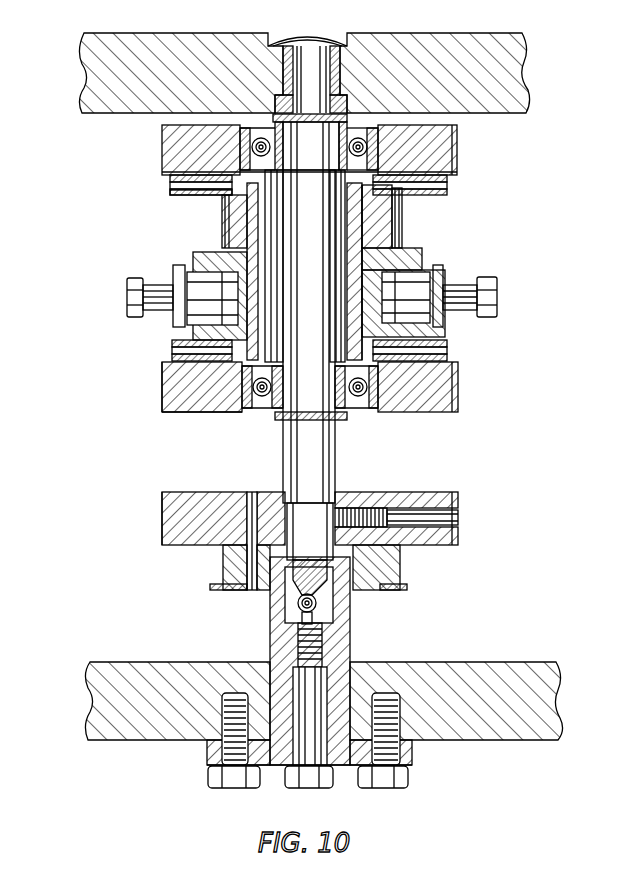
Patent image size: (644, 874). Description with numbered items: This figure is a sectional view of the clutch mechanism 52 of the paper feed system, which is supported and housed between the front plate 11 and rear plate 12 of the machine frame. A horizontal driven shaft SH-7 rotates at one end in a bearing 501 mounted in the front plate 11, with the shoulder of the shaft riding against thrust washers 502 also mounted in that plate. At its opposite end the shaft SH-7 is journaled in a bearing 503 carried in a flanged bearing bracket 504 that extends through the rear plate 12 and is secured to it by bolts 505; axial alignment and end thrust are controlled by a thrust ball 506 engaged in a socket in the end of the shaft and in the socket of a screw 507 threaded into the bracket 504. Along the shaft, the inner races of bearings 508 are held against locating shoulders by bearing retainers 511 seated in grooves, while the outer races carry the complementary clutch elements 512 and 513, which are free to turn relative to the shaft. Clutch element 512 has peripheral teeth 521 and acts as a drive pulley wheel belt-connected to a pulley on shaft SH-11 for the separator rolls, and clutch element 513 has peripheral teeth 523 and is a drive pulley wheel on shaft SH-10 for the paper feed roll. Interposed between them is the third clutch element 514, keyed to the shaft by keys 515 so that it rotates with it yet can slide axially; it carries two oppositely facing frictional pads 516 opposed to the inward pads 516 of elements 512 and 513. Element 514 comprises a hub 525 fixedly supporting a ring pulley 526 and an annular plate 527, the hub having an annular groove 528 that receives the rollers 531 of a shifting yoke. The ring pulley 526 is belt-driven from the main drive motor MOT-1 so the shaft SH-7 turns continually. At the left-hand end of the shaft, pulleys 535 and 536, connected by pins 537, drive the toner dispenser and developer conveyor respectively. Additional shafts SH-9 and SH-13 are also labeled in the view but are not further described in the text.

The front plate 11 is at (516, 48).
The rear plate 12 is at (501, 738).
The bearing 501 is at (283, 62).
The thrust washers 502 is at (343, 100).
The bearings 508 is at (253, 122).
The bearing retainers 511 is at (285, 124).
The clutch element 513 is at (455, 128).
The peripheral teeth 523 is at (458, 163).
The shaft SH-10 is at (152, 159).
The frictional pads 516 is at (170, 181).
The annular plate 527 is at (170, 194).
The keys 515 is at (226, 210).
The main drive motor MOT-1 is at (208, 230).
The third clutch element 514 is at (184, 254).
The hub 525 is at (406, 250).
The ring pulley 526 is at (398, 222).
The annular groove 528 is at (424, 327).
The rollers 531 is at (184, 266).
The clutch mechanism 52 is at (506, 295).
The shaft SH-11 is at (458, 386).
The peripheral teeth 521 is at (162, 390).
The clutch element 512 is at (184, 412).
The driven shaft SH-7 is at (332, 450).
The pins 537 is at (254, 492).
The pulley 536 is at (160, 520).
The lower housing SH-9 is at (458, 516).
The pulley 535 is at (222, 570).
The right bracket SH-13 is at (400, 568).
The bearing 503 is at (286, 604).
The thrust ball 506 is at (320, 612).
The screw 507 is at (296, 643).
The flanged bearing bracket 504 is at (342, 647).
The bolts 505 is at (208, 784).